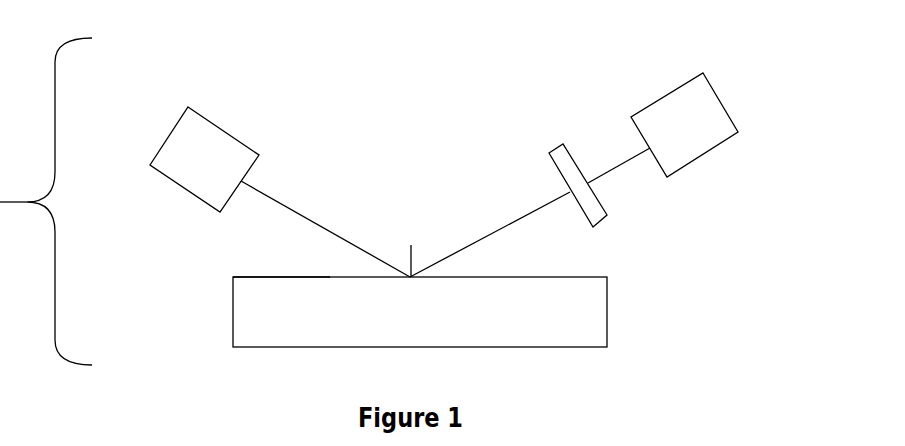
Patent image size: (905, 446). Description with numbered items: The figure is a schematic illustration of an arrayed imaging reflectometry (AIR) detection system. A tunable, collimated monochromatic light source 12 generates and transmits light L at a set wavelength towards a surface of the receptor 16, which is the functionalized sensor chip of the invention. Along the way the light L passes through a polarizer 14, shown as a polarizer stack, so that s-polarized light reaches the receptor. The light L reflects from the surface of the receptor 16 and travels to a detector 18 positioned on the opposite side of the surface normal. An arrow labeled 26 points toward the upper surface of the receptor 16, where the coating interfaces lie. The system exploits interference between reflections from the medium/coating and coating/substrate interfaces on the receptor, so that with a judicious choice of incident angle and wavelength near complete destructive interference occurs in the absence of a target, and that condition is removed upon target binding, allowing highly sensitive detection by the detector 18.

The light source 12 is at (722, 143).
The polarizer 14 is at (600, 198).
The receptor 16 is at (233, 323).
The detector 18 is at (167, 137).
The receptor surface 26 is at (296, 272).
The light L is at (488, 235).